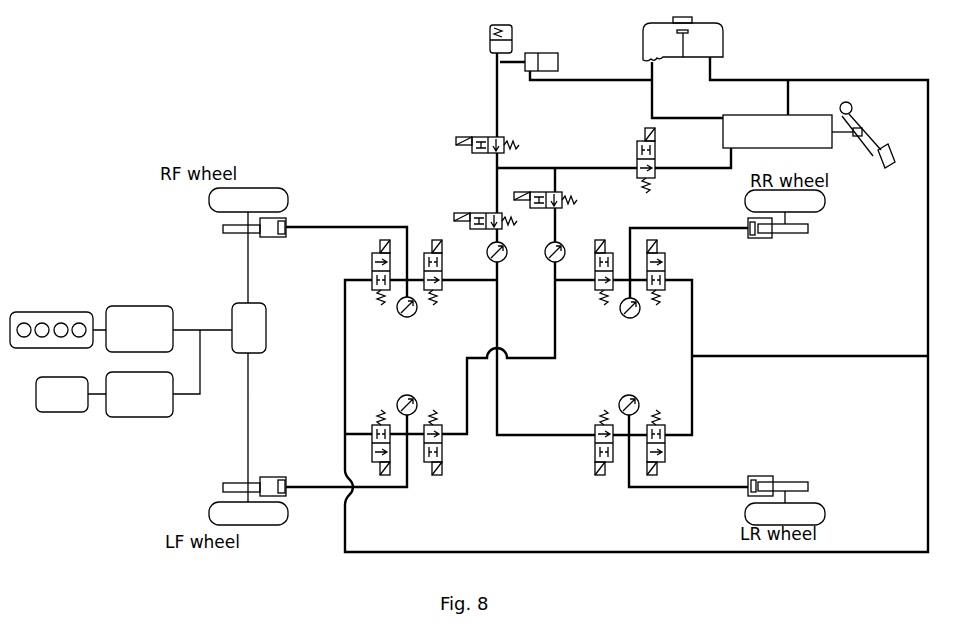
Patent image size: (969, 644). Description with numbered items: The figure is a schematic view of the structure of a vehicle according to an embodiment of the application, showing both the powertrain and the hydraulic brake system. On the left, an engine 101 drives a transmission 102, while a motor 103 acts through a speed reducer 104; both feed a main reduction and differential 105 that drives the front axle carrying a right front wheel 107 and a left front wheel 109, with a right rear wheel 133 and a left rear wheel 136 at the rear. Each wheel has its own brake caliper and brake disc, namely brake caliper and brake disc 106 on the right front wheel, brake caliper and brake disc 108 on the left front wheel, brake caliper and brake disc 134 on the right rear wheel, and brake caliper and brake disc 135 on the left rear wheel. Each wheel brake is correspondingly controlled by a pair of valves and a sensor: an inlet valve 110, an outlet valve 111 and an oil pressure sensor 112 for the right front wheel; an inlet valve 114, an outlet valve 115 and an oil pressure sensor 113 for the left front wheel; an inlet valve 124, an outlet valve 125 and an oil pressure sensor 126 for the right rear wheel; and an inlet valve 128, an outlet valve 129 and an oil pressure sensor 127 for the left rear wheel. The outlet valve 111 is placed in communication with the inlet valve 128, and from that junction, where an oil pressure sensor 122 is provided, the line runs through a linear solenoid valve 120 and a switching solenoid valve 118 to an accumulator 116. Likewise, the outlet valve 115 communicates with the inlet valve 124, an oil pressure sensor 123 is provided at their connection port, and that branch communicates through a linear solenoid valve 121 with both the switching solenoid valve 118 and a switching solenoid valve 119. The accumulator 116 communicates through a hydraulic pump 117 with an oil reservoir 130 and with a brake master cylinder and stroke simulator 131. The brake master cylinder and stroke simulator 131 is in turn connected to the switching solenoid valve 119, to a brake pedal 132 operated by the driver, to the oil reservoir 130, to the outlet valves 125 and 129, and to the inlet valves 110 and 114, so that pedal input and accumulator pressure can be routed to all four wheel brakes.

The engine 101 is at (50, 312).
The transmission 102 is at (133, 306).
The motor 103 is at (64, 412).
The speed reducer 104 is at (145, 417).
The main reduction and differential 105 is at (266, 324).
The brake caliper and brake disc 106 is at (225, 234).
The right front wheel 107 is at (252, 188).
The brake caliper and brake disc 108 is at (222, 487).
The left front wheel 109 is at (270, 521).
The inlet valve 110 is at (372, 265).
The outlet valve 111 is at (442, 284).
The oil pressure sensor 112 is at (415, 313).
The oil pressure sensor 113 is at (410, 397).
The inlet valve 114 is at (375, 425).
The outlet valve 115 is at (442, 452).
The accumulator 116 is at (512, 30).
The hydraulic pump 117 is at (558, 62).
The switching solenoid valve 118 is at (520, 143).
The switching solenoid valve 119 is at (657, 150).
The linear solenoid valve 120 is at (475, 212).
The linear solenoid valve 121 is at (578, 200).
The oil pressure sensor 122 is at (507, 257).
The oil pressure sensor 123 is at (553, 262).
The inlet valve 124 is at (595, 292).
The outlet valve 125 is at (665, 262).
The oil pressure sensor 126 is at (637, 315).
The oil pressure sensor 127 is at (639, 398).
The inlet valve 128 is at (595, 450).
The outlet valve 129 is at (665, 455).
The oil reservoir 130 is at (710, 27).
The brake master cylinder and stroke simulator 131 is at (778, 148).
The brake pedal 132 is at (854, 110).
The right rear wheel 133 is at (825, 196).
The brake caliper and brake disc 134 is at (808, 228).
The brake caliper and brake disc 135 is at (808, 486).
The left rear wheel 136 is at (810, 522).